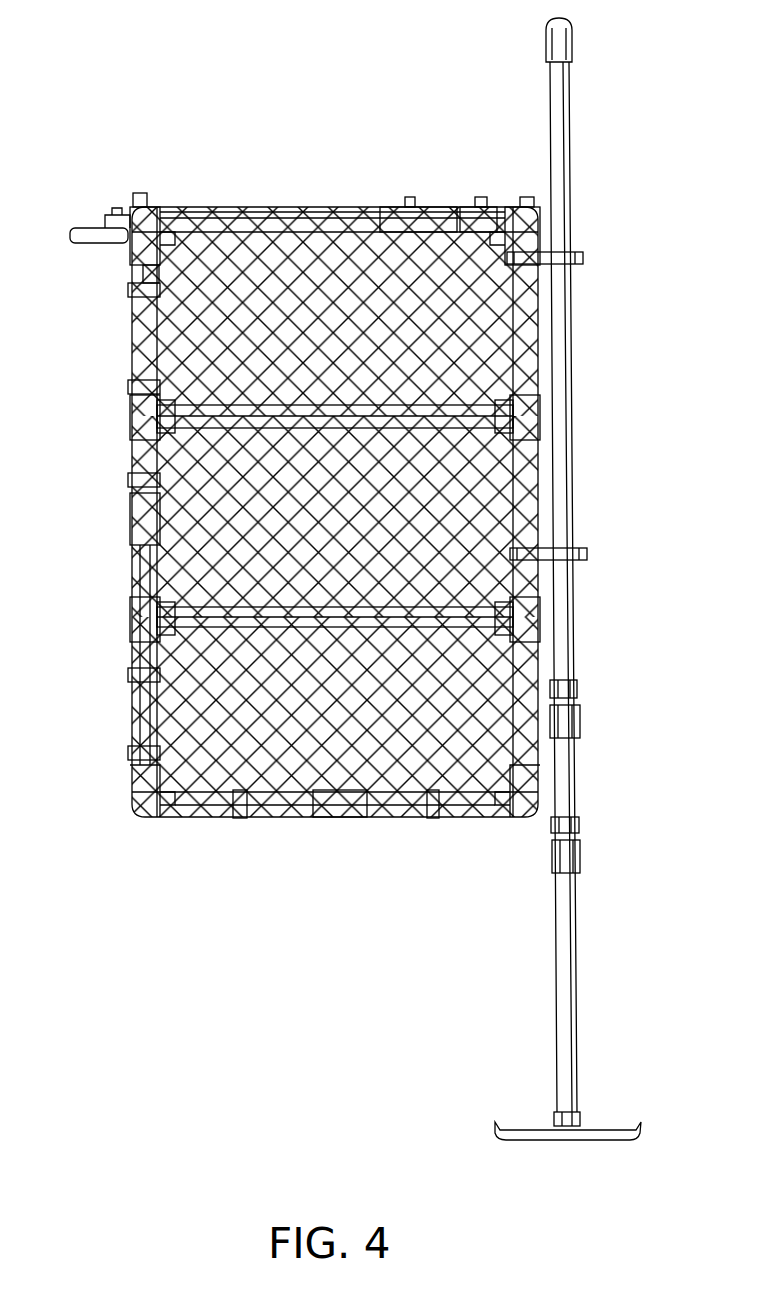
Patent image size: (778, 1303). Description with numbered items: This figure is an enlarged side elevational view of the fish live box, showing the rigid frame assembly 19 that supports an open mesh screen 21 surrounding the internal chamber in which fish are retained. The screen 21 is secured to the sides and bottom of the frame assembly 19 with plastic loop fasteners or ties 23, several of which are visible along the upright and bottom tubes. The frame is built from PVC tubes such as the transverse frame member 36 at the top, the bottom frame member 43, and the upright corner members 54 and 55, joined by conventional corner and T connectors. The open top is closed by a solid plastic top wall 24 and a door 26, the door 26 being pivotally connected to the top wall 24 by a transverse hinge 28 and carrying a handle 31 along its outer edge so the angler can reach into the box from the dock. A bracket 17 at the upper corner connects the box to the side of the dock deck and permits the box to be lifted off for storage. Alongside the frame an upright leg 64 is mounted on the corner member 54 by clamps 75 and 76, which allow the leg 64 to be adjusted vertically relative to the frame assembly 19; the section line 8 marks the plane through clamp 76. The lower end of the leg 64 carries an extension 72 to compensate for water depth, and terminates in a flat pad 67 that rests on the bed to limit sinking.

The section line 8- 8 is at (500, 533).
The bracket 17 is at (75, 228).
The frame assembly 19 is at (128, 567).
The open mesh screen 21 is at (185, 358).
The plastic loop fasteners or ties 23 is at (140, 482).
The top wall 24 is at (470, 198).
The door 26 is at (222, 208).
The transverse hinge 28 is at (410, 198).
The handle 31 is at (140, 193).
The transverse frame member 36 is at (150, 270).
The bottom frame member 43 is at (200, 818).
The upright frame member 54 is at (540, 672).
The upright frame member 55 is at (140, 700).
The leg 64 is at (568, 348).
The pad 67 is at (605, 1126).
The lower extension 72 is at (573, 962).
The clamp 75 is at (583, 256).
The clamp 76 is at (582, 560).